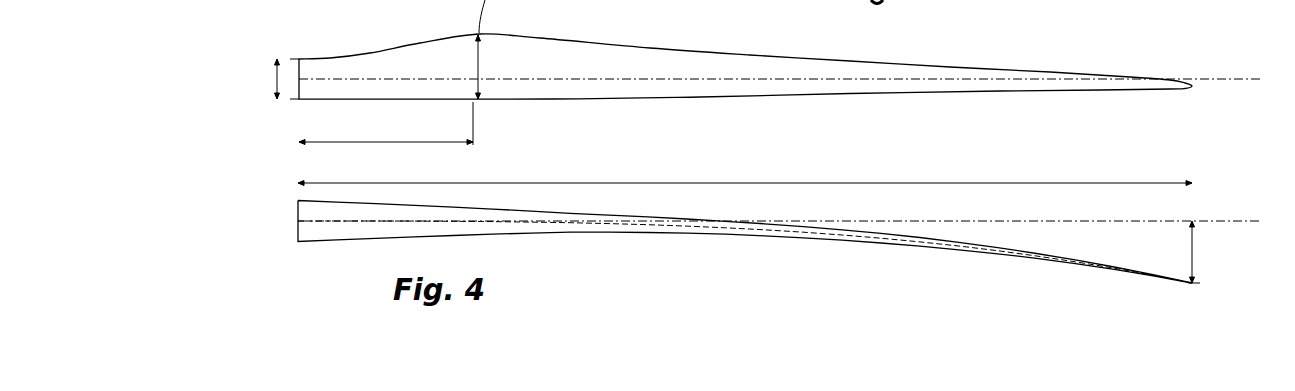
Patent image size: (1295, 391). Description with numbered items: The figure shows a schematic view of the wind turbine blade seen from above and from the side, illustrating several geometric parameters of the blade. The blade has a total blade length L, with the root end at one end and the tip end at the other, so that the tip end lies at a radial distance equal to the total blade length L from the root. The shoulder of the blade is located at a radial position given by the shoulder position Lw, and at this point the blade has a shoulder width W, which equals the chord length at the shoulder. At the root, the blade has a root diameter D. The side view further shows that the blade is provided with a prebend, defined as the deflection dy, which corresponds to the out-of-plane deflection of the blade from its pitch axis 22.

The pitch axis 22 is at (652, 79).
The root diameter D is at (279, 79).
The shoulder width W is at (490, 67).
The shoulder position Lw is at (386, 123).
The total blade length L is at (745, 174).
The prebend dy is at (1204, 252).